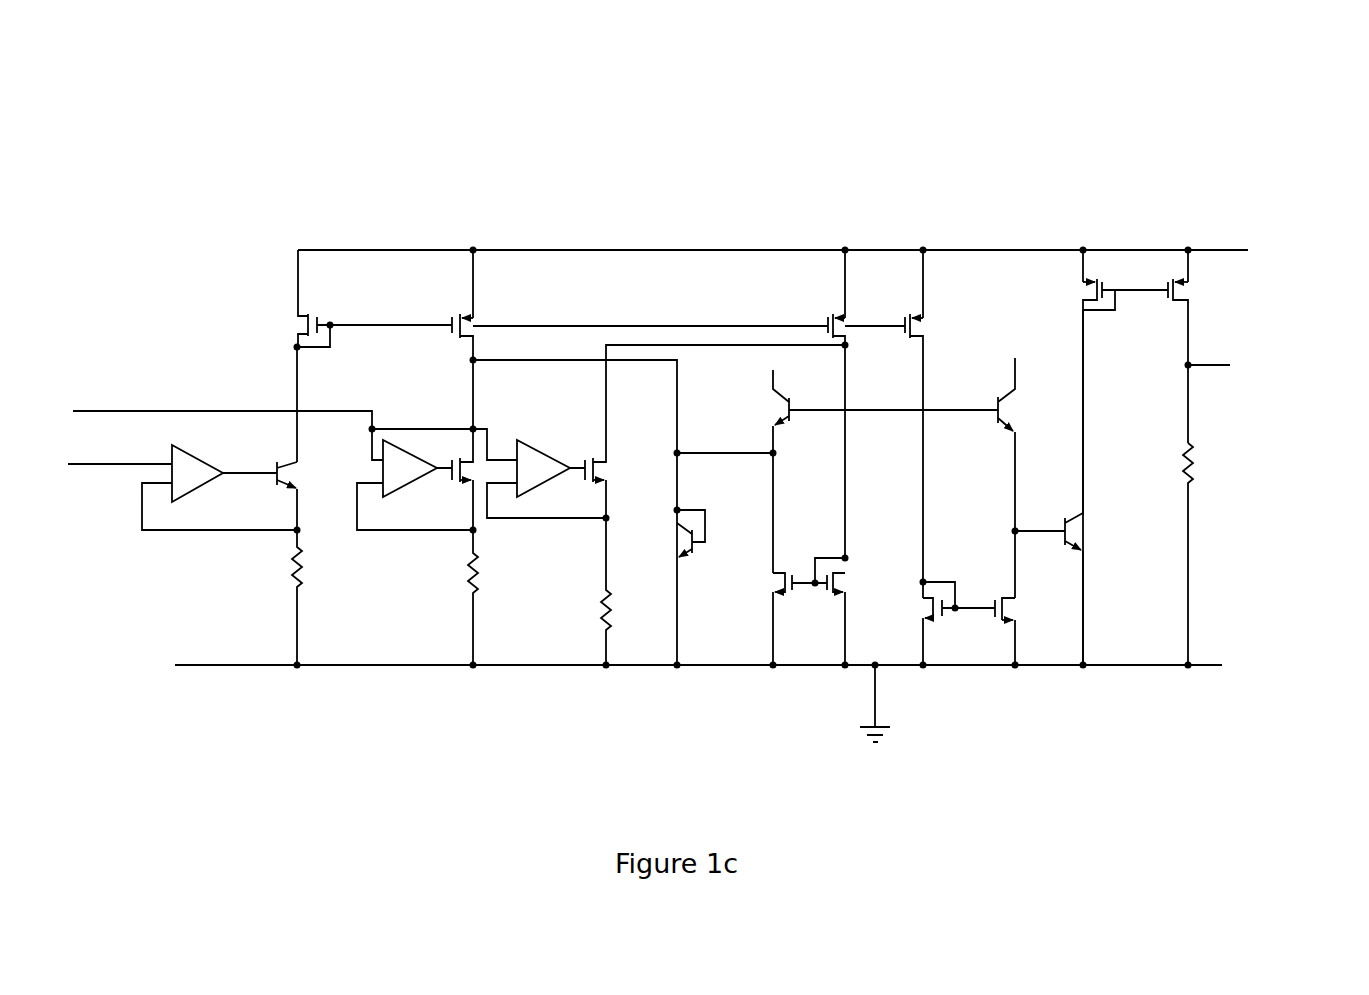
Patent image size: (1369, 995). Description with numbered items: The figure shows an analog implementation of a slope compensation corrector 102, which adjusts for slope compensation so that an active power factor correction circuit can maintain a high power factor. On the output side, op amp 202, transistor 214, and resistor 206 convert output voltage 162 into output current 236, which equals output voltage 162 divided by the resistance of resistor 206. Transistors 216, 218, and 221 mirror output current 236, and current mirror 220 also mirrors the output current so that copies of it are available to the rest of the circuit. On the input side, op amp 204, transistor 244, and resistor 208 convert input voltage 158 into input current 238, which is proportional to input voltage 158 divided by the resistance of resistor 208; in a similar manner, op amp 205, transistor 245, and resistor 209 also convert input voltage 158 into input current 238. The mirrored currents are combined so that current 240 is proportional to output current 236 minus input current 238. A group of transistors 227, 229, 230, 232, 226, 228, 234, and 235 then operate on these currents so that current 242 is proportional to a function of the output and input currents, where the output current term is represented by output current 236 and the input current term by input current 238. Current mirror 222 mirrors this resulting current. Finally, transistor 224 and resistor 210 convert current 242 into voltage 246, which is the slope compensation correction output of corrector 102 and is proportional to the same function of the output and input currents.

The slope compensation corrector 102 is at (416, 162).
The input voltage 158 is at (188, 410).
The output voltage 162 is at (110, 469).
The op amp 202 is at (205, 484).
The op amp 204 is at (405, 487).
The op amp 205 is at (545, 485).
The resistor 206 is at (295, 573).
The resistor 208 is at (470, 567).
The resistor 209 is at (600, 604).
The resistor 210 is at (1200, 457).
The transistor 214 is at (279, 460).
The transistor 216 is at (310, 312).
The transistor 218 is at (455, 337).
The current mirror 220 is at (926, 326).
The transistor 221 is at (850, 332).
The current mirror 222 is at (1080, 283).
The transistor 224 is at (1190, 292).
The transistor 226 is at (920, 607).
The transistor 227 is at (850, 581).
The transistor 228 is at (1022, 611).
The transistor 229 is at (770, 583).
The transistor 230 is at (676, 537).
The transistor 232 is at (776, 416).
The transistor 234 is at (996, 425).
The transistor 235 is at (1090, 535).
The output current 236 is at (305, 365).
The input current 238 is at (466, 409).
The current 240 is at (680, 381).
The current 242 is at (1089, 445).
The transistor 244 is at (452, 484).
The transistor 245 is at (592, 457).
The voltage 246 is at (1213, 363).